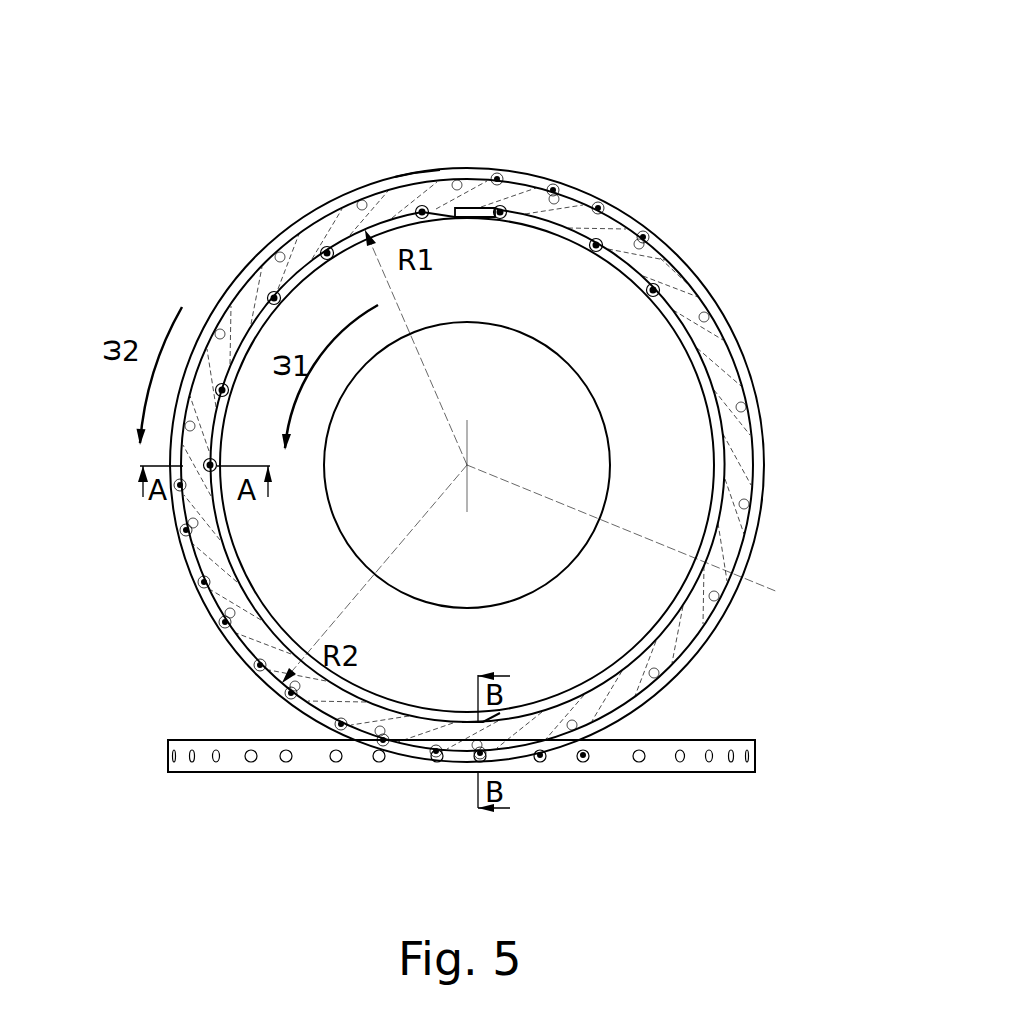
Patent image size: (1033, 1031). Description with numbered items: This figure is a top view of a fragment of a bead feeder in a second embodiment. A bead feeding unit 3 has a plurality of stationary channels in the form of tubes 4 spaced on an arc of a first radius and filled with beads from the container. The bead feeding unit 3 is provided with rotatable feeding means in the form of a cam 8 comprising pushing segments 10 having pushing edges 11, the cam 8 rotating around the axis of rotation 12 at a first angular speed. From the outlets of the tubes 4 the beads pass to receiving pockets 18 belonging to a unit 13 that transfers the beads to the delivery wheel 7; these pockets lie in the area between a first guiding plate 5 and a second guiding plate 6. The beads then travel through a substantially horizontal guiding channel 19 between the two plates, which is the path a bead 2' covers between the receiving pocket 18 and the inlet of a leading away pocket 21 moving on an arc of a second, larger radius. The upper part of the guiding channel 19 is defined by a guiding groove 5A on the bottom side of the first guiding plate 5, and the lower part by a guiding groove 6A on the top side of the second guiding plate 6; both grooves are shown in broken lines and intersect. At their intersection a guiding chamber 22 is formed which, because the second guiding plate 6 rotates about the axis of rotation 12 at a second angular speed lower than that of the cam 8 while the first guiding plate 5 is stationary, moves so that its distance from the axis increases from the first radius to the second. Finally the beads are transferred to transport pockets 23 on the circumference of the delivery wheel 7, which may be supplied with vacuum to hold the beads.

The bead feeding unit 3 is at (292, 107).
The transferring unit 13 is at (220, 198).
The leading away pocket 21 is at (322, 245).
The first guiding plate 5 is at (653, 290).
The guiding chamber 22 is at (423, 213).
The receiving pocket 18 is at (423, 213).
The guiding channel 19 is at (416, 165).
The bead 2' is at (467, 439).
The guiding groove 6A is at (427, 213).
The second guiding plate 6 is at (675, 268).
The tube 4 is at (222, 388).
The pushing edge 11 is at (490, 180).
The pushing segment 10 is at (505, 212).
The guiding groove 5A is at (423, 210).
The axis of rotation 12 is at (818, 595).
The cam 8 is at (277, 582).
The delivery wheel 7 is at (265, 763).
The transport pocket 23 is at (250, 756).